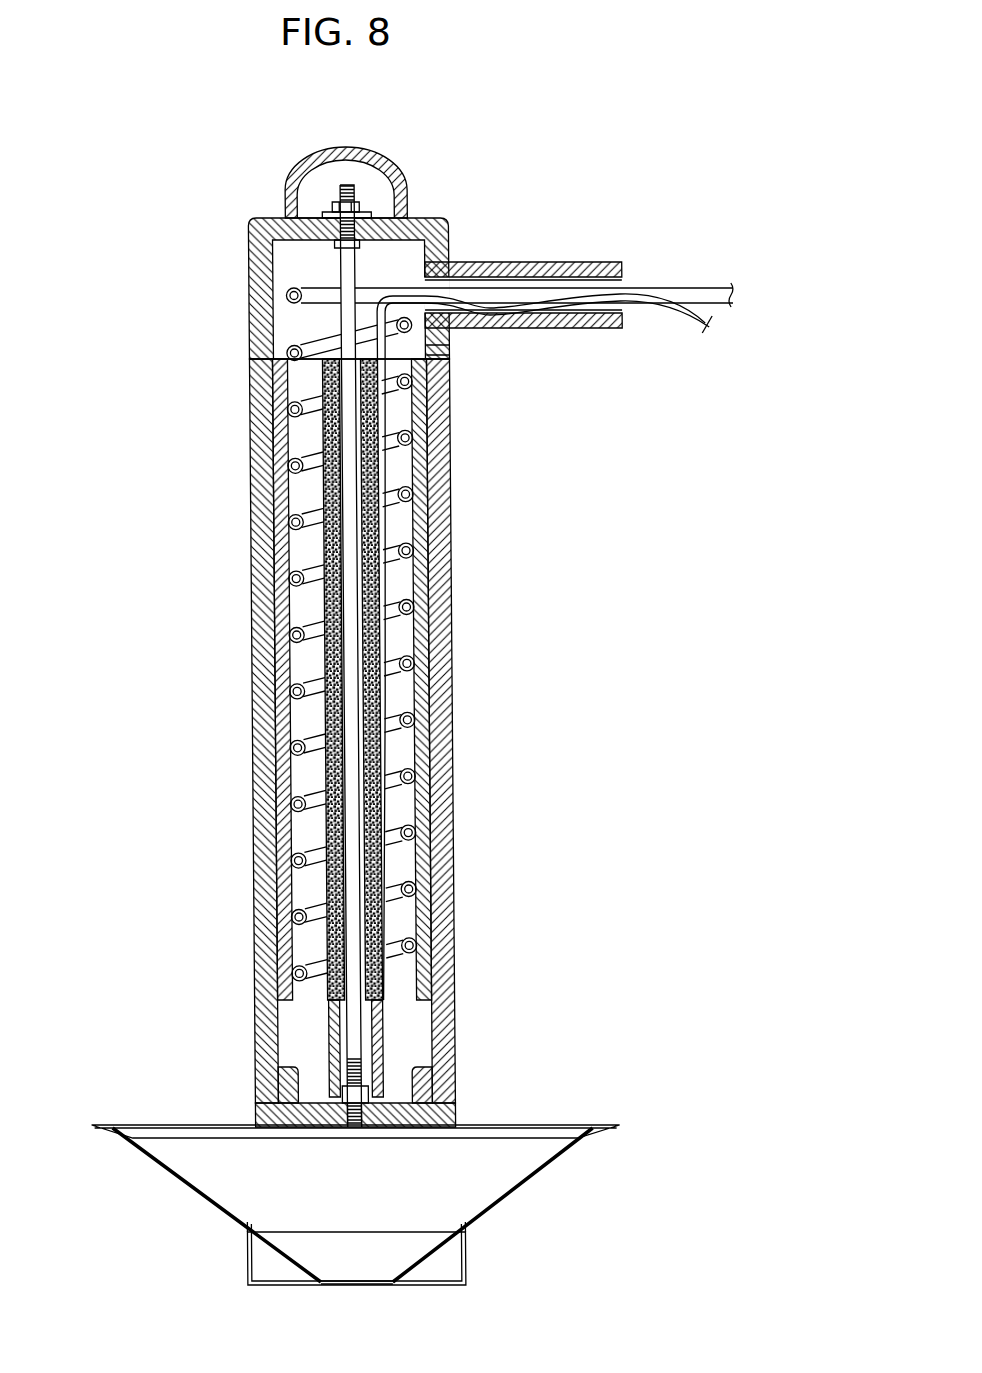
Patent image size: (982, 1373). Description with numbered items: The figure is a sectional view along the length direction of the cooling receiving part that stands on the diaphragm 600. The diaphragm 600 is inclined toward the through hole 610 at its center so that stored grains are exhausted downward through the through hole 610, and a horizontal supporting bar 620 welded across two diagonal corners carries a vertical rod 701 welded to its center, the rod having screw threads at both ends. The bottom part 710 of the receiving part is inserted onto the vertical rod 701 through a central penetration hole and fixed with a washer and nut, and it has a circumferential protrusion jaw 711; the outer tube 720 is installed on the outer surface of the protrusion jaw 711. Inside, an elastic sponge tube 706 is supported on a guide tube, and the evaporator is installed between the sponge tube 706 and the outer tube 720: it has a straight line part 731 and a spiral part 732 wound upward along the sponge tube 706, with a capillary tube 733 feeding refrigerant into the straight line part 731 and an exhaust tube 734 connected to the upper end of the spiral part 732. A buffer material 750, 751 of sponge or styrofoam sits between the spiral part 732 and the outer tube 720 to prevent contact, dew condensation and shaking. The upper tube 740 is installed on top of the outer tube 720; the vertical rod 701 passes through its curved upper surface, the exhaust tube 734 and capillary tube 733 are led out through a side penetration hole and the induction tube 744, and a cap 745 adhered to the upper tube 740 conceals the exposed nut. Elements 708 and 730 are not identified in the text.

The diaphragm 600 is at (183, 1187).
The through hole 610 is at (365, 1282).
The supporting bar 620 is at (507, 1130).
The vertical rod 701 is at (347, 318).
The sponge tube 706 is at (377, 472).
The lower sleeve 708 is at (330, 1030).
The bottom part 710 is at (267, 1115).
The protrusion jaw 711 is at (432, 1082).
The outer tube 720 is at (440, 618).
The heating coil spring 730 is at (303, 620).
The straight line part 731 is at (440, 352).
The spiral part 732 is at (307, 515).
The capillary tube 733 is at (673, 312).
The exhaust tube 734 is at (693, 293).
The upper tube 740 is at (257, 256).
The induction tube 744 is at (552, 268).
The cap 745 is at (404, 177).
The buffer material 750 is at (275, 427).
The buffer material 751 is at (440, 404).